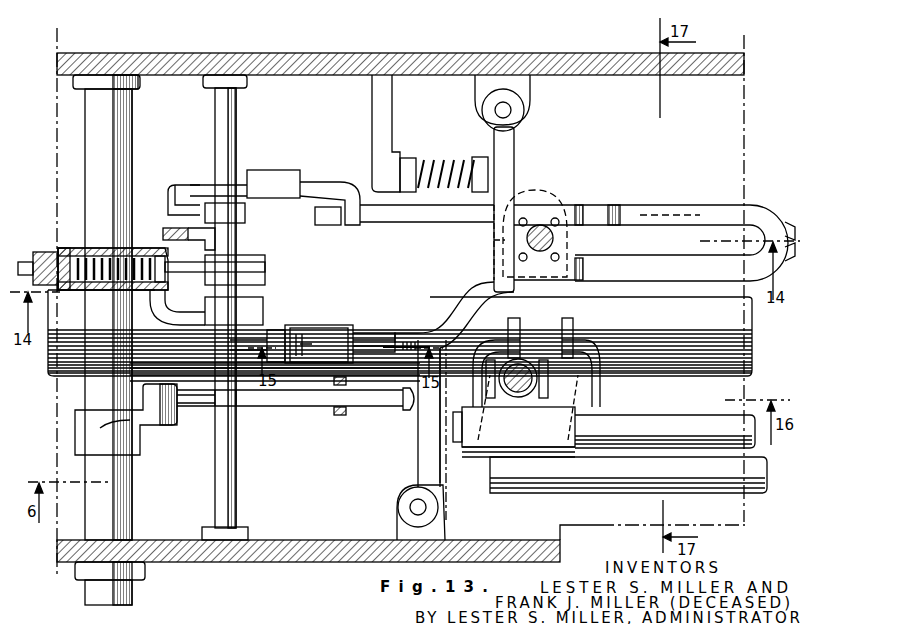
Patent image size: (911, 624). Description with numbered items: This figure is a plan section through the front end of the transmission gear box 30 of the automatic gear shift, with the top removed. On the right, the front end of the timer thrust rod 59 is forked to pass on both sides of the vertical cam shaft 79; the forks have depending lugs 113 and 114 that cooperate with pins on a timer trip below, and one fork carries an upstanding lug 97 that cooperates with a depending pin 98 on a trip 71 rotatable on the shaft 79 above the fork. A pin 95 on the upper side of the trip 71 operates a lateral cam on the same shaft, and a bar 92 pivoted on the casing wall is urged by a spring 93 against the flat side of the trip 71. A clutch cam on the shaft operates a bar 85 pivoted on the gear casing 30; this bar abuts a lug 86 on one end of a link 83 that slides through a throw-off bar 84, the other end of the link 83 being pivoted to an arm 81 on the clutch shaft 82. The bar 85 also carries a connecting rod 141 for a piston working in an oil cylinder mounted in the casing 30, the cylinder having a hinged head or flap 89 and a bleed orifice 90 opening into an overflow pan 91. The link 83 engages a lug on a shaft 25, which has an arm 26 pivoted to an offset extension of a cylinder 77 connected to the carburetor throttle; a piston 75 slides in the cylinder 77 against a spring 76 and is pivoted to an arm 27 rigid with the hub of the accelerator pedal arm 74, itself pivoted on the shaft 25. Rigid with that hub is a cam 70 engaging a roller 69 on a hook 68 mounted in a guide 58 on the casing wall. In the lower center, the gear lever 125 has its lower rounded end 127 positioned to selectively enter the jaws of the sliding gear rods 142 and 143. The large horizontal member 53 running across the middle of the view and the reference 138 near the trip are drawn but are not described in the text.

The transmission gear box 30 is at (558, 62).
The clutch shaft 82 is at (105, 495).
The shaft 25 is at (222, 453).
The arm 81 is at (138, 417).
The roller 69 is at (177, 203).
The hook 68 is at (263, 185).
The guide 58 is at (312, 188).
The cam 70 is at (247, 213).
The accelerator pedal arm 74 is at (168, 231).
The arm 27 is at (262, 258).
The piston 75 is at (266, 270).
The spring 76 is at (112, 249).
The cylinder 77 is at (102, 291).
The arm 26 is at (263, 316).
The shaft 53 is at (625, 343).
The spring 93 is at (455, 162).
The bar 92 is at (514, 165).
The trip 71 is at (523, 222).
The vertical cam shaft 79 is at (555, 238).
The pin 95 is at (519, 223).
The slot 138 is at (505, 268).
The depending pin 98 is at (580, 208).
The depending lug 113 is at (585, 264).
The timer thrust rod 59 is at (764, 205).
The upstanding lug 97 is at (646, 210).
The depending lug 114 is at (670, 203).
The overflow pan 91 is at (335, 332).
The bleed orifice 90 is at (314, 345).
The hinged head or flap 89 is at (270, 345).
The connecting rod 141 is at (373, 343).
The throw-off bar 84 is at (342, 416).
The link 83 is at (372, 408).
The lug 86 is at (407, 412).
The bar 85 is at (425, 471).
The gear lever 125 is at (520, 368).
The lower rounded end 127 is at (512, 397).
The sliding gear rod 142 is at (665, 423).
The sliding gear rod 143 is at (658, 470).